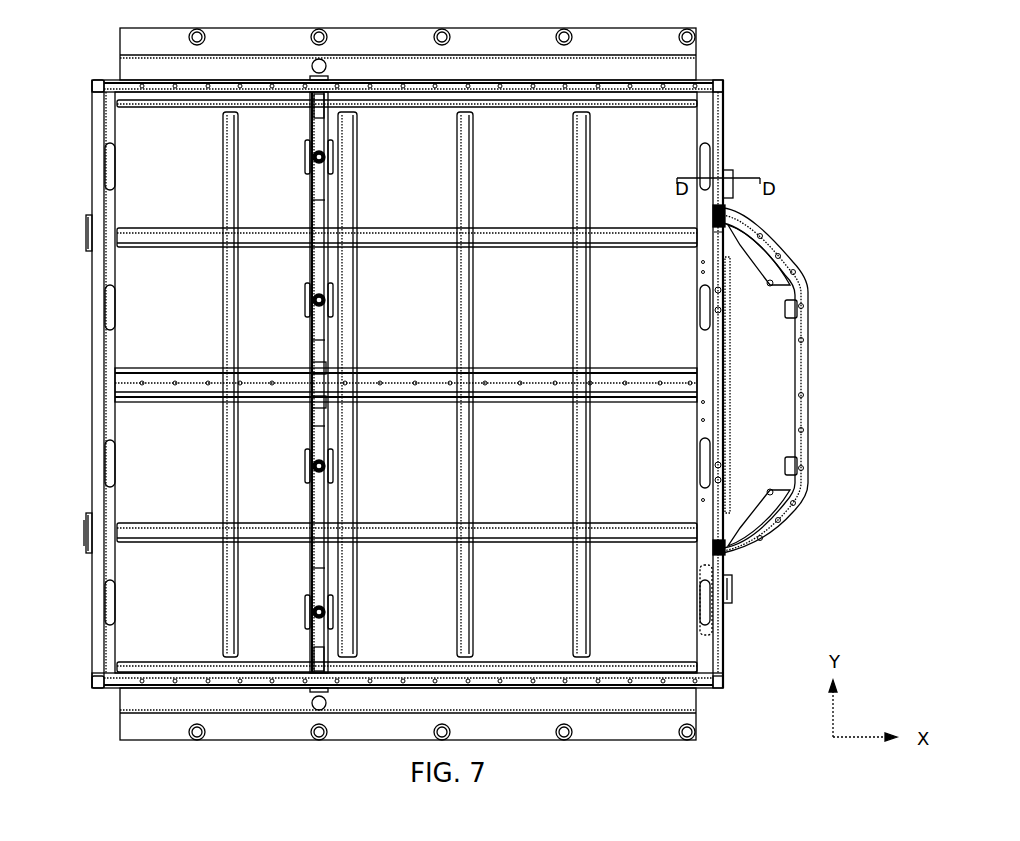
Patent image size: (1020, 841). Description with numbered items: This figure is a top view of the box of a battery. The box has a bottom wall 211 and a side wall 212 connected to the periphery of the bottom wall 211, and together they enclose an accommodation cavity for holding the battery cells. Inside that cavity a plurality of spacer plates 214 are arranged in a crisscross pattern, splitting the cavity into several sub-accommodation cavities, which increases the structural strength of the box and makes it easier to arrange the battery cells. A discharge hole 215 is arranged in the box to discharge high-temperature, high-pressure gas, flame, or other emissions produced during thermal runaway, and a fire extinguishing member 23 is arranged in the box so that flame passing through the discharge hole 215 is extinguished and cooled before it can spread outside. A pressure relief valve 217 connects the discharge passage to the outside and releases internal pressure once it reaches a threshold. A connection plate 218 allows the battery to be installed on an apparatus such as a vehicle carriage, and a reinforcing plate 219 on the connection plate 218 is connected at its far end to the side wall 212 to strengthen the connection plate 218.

The bottom wall 211 is at (680, 146).
The side wall 212 is at (702, 117).
The spacer plate 214 is at (312, 440).
The discharge hole 215 is at (726, 608).
The pressure relief valve 217 is at (88, 537).
The connection plate 218 is at (665, 735).
The reinforcing plate 219 is at (665, 705).
The fire extinguishing member 23 is at (726, 636).